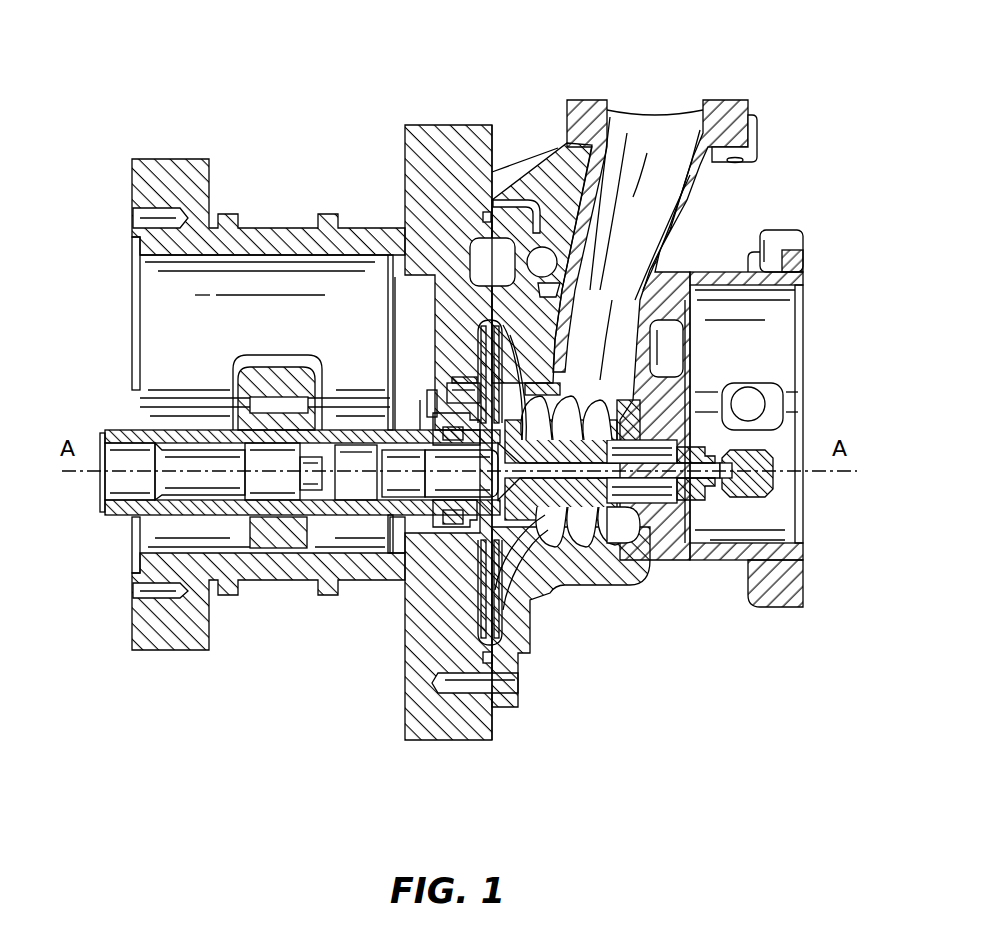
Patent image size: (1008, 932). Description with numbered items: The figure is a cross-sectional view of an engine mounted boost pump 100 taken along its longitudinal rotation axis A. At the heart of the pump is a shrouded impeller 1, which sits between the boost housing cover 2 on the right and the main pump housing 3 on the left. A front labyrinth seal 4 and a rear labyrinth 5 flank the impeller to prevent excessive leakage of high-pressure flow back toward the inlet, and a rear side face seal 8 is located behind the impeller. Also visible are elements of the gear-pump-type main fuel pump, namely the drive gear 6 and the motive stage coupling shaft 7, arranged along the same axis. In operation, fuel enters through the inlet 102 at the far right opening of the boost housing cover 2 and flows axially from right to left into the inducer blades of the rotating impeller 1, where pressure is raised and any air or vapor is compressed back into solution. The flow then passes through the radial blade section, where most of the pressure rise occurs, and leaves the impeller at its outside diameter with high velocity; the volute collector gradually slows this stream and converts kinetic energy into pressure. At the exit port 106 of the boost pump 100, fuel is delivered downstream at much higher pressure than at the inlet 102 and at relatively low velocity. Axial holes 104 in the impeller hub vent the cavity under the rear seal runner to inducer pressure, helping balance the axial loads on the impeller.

The engine mounted boost pump 100 is at (240, 108).
The shrouded impeller 1 is at (545, 530).
The boost housing cover 2 is at (655, 540).
The main pump housing 3 is at (423, 187).
The front labyrinth seal 4 is at (548, 380).
The rear labyrinth 5 is at (452, 370).
The drive gear 6 is at (282, 540).
The motive stage coupling shaft 7 is at (758, 486).
The rear side face seal 8 is at (437, 524).
The inlet 102 is at (620, 418).
The axial holes 104 is at (486, 412).
The exit port 106 is at (476, 232).